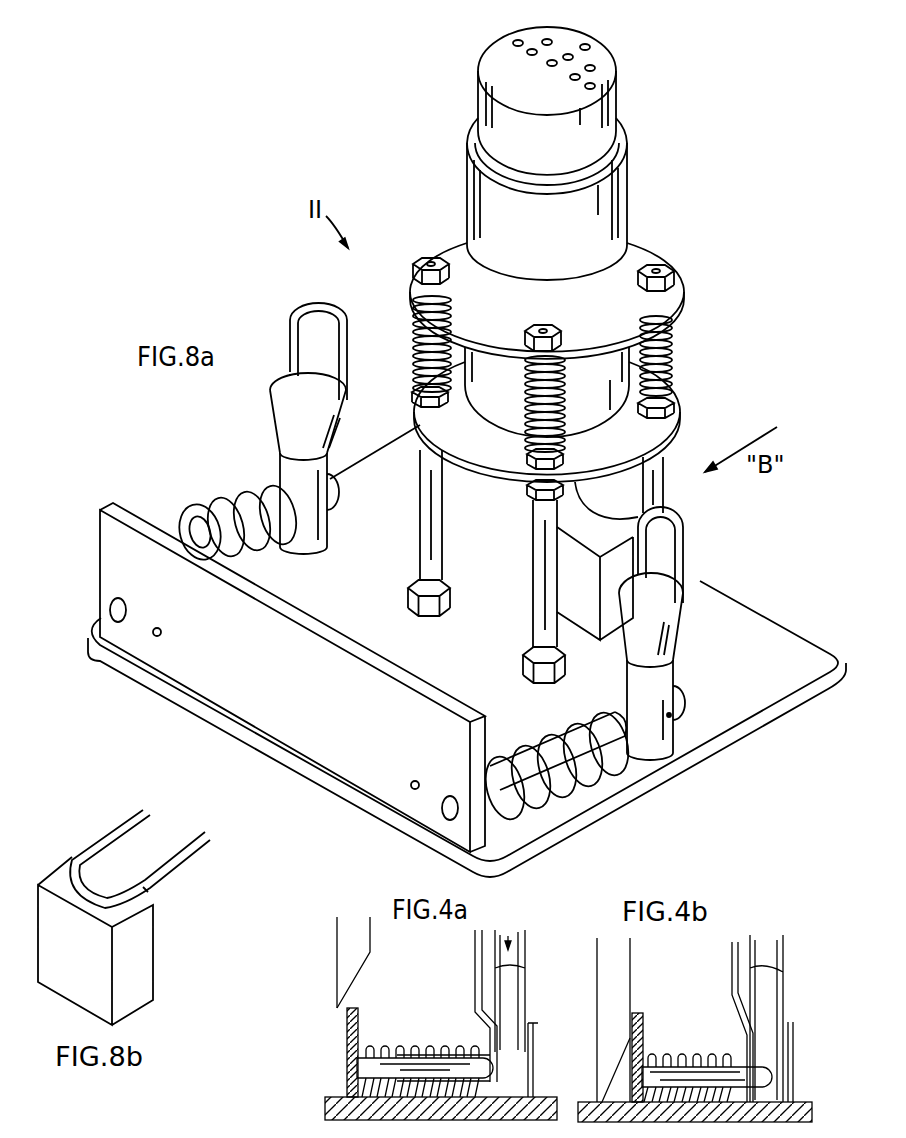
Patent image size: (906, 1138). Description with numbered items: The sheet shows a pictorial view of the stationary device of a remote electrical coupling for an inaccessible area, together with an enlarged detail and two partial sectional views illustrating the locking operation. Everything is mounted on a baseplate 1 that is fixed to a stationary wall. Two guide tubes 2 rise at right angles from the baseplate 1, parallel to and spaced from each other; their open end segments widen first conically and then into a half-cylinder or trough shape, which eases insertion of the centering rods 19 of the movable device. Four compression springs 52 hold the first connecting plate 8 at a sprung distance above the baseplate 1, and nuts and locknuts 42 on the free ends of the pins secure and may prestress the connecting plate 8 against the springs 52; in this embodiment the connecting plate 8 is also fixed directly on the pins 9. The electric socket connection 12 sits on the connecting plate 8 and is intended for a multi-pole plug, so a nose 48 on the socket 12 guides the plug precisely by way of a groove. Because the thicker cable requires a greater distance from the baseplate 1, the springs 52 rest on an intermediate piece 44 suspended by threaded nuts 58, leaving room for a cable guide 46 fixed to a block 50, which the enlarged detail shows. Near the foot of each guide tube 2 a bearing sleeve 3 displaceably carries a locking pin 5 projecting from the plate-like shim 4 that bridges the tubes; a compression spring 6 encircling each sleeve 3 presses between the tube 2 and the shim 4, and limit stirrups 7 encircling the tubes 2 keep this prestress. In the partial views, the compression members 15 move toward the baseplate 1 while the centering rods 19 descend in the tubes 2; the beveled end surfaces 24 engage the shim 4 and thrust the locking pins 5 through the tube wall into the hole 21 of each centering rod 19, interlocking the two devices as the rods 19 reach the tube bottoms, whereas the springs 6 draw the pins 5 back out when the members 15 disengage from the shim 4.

In FIG. 8A, the baseplate 1 is at (320, 797).
In FIG. 4A, the baseplate 1 is at (325, 1106).
In FIG. 8A, the guide tube 2 is at (668, 638).
In FIG. 4A, the guide tube 2 is at (475, 950).
In FIG. 8A, the bearing sleeve 3 is at (561, 715).
In FIG. 4A, the bearing sleeve 3 is at (430, 1058).
In FIG. 8A, the shim 4 is at (298, 708).
In FIG. 4A, the shim 4 is at (347, 1042).
In FIG. 8A, the locking pin 5 is at (537, 803).
In FIG. 4A, the locking pin 5 is at (401, 1056).
In FIG. 8A, the compression spring 6 is at (253, 497).
In FIG. 4B, the compression spring 6 is at (703, 1056).
In FIG. 8A, the limit stirrup 7 is at (340, 508).
In FIG. 8A, the first connecting plate 8 is at (653, 254).
In FIG. 8A, the pin 9 is at (660, 491).
In FIG. 8A, the electric socket connection 12 is at (603, 128).
In FIG. 4A, the compression member 15 is at (342, 930).
In FIG. 4A, the centering rod 19 is at (520, 963).
In FIG. 4A, the hole 21 is at (533, 1024).
In FIG. 4A, the beveled end surface 24 is at (359, 970).
In FIG. 4B, the beveled end surface 24 is at (623, 1053).
In FIG. 8A, the nuts and locknuts 42 is at (675, 280).
In FIG. 8A, the intermediate piece 44 is at (660, 419).
In FIG. 8B, the cable guide 46 is at (117, 850).
In FIG. 8A, the nose 48 is at (487, 126).
In FIG. 8B, the block 50 is at (75, 985).
In FIG. 8A, the compression spring 52 is at (665, 360).
In FIG. 8A, the threaded nut 58 is at (530, 490).